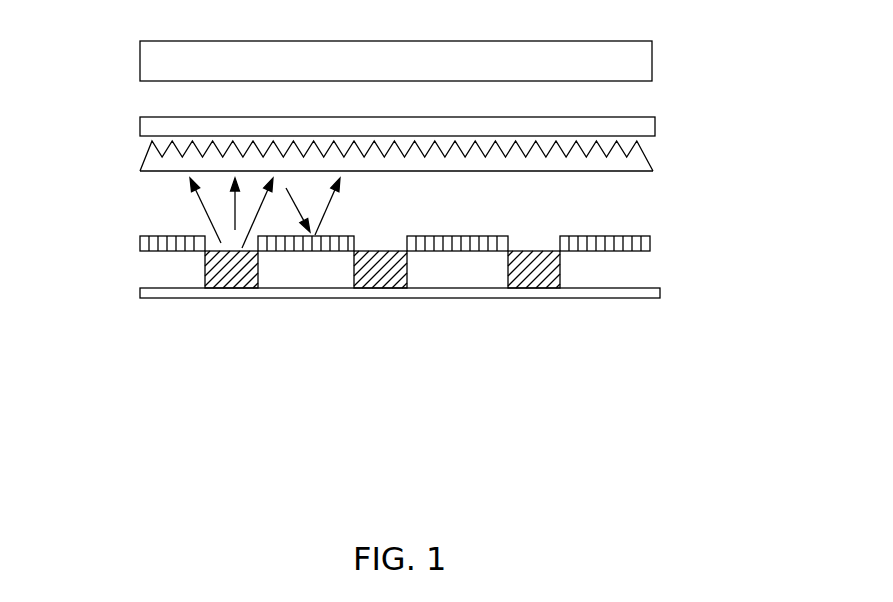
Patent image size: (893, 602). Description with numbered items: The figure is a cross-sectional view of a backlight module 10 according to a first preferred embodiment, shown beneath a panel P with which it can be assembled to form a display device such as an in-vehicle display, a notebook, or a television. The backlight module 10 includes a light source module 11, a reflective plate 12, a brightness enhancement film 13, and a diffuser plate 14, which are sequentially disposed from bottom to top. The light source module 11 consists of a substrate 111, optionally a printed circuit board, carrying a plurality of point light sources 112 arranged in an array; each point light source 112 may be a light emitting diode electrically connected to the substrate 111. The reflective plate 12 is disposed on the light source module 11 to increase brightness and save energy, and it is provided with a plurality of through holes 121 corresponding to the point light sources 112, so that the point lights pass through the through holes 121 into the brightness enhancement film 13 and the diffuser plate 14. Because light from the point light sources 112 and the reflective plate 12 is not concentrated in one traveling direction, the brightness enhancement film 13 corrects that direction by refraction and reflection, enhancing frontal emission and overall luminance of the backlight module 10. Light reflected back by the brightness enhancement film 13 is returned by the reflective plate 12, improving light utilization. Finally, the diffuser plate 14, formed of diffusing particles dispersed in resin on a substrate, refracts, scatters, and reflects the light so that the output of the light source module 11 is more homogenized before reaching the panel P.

The panel P is at (652, 55).
The backlight module 10 is at (110, 110).
The light source module 11 is at (645, 405).
The substrate 111 is at (627, 299).
The point light source 112 is at (218, 298).
The reflective plate 12 is at (440, 215).
The through hole 121 is at (525, 233).
The brightness enhancement film 13 is at (650, 166).
The diffuser plate 14 is at (655, 122).